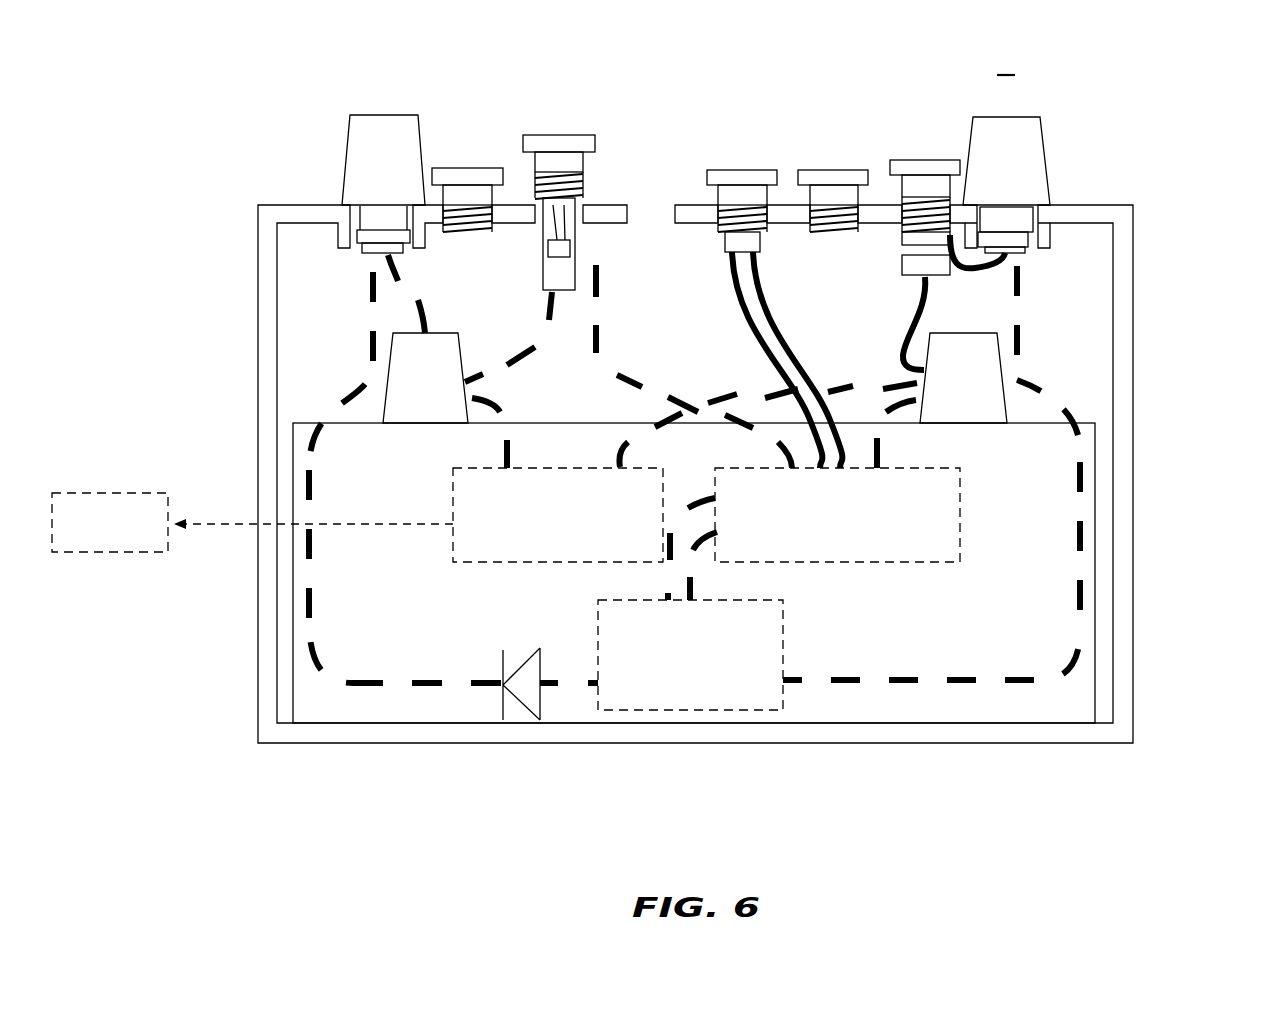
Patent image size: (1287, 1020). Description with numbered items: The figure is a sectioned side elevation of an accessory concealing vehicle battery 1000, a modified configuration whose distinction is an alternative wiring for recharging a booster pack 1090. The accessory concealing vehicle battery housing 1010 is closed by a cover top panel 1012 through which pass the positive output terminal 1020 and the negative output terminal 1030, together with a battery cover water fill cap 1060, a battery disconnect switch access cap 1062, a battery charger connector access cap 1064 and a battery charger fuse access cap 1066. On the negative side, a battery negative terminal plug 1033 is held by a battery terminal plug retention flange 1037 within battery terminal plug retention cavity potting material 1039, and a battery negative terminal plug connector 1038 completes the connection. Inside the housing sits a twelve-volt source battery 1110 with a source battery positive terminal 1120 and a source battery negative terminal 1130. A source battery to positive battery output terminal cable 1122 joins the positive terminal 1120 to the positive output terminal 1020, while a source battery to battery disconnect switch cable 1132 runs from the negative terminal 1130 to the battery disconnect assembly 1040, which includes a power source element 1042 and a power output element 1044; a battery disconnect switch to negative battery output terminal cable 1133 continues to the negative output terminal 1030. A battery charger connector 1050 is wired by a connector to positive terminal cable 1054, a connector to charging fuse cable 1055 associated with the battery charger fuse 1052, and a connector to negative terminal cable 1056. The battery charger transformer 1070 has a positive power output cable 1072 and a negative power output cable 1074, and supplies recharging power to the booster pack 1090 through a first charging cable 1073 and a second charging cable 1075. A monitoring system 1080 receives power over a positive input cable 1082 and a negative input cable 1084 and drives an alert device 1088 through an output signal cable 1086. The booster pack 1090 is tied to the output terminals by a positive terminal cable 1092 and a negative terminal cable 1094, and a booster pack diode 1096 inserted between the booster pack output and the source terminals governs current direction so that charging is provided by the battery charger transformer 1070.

The accessory concealing vehicle battery 1000 is at (213, 165).
The accessory concealing vehicle battery housing 1010 is at (1133, 675).
The accessory concealing vehicle battery cover top panel 1012 is at (694, 204).
The accessory concealing vehicle battery positive output terminal 1020 is at (382, 155).
The accessory concealing vehicle battery negative output terminal 1030 is at (1008, 153).
The battery negative terminal plug 1033 is at (1007, 218).
The battery terminal plug retention flange 1037 is at (1028, 255).
The battery negative terminal plug connector 1038 is at (1012, 272).
The battery terminal plug retention cavity potting material 1039 is at (1033, 237).
The battery disconnect assembly 1040 is at (893, 194).
The battery disconnect assembly power source element 1042 is at (912, 268).
The battery disconnect assembly power output element 1044 is at (913, 233).
The battery charger connector 1050 is at (738, 237).
The battery charger fuse 1052 is at (557, 227).
The battery charger connector to positive terminal cable 1054 is at (367, 322).
The battery charger connector to charging fuse cable 1055 is at (730, 282).
The battery charger connector to negative terminal cable 1056 is at (790, 353).
The battery cover water fill cap 1060 is at (468, 168).
The battery disconnect switch access cap 1062 is at (926, 160).
The battery charger connector access cap 1064 is at (743, 169).
The battery charger fuse access cap 1066 is at (558, 135).
The battery charger transformer 1070 is at (918, 490).
The battery charger transformer positive power output cable 1072 is at (640, 377).
The first battery charger transformer to booster pack charging cable 1073 is at (662, 597).
The battery charger transformer negative power output cable 1074 is at (880, 438).
The second battery charger transformer booster pack charging cable 1075 is at (700, 593).
The monitoring system 1080 is at (458, 492).
The monitoring system positive input cable 1082 is at (497, 442).
The monitoring system negative input cable 1084 is at (753, 395).
The monitoring system output signal cable 1086 is at (217, 524).
The monitoring system alert device 1088 is at (111, 493).
The booster pack 1090 is at (768, 632).
The booster pack to output battery positive terminal cable 1092 is at (342, 670).
The booster pack to output battery negative terminal cable 1094 is at (1053, 662).
The booster pack diode 1096 is at (520, 683).
The 12 volt source battery 1110 is at (953, 693).
The 12 volt source battery positive terminal 1120 is at (425, 383).
The 12 volt source battery to positive battery output terminal cable 1122 is at (402, 300).
The 12 volt source battery negative terminal 1130 is at (965, 385).
The 12 volt source battery to battery disconnect switch cable 1132 is at (998, 272).
The battery disconnect switch to negative battery output terminal cable 1133 is at (1017, 325).